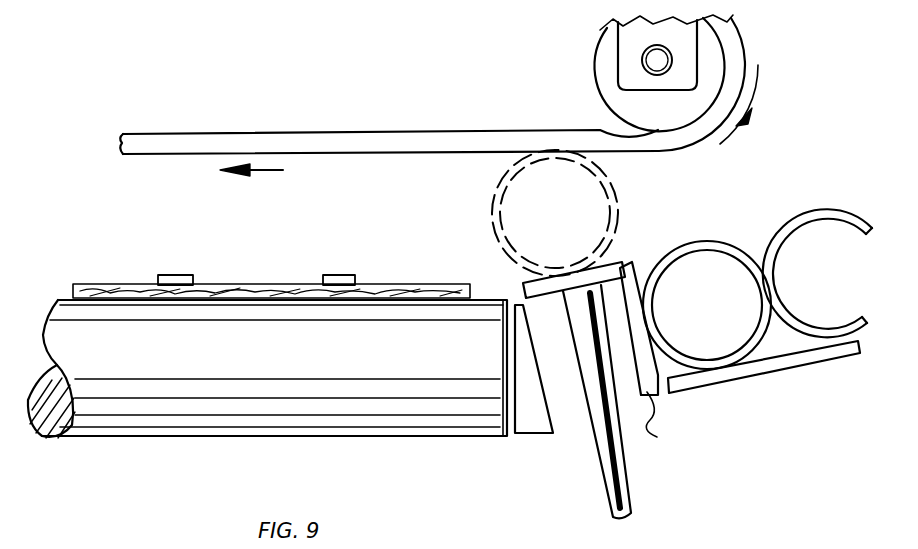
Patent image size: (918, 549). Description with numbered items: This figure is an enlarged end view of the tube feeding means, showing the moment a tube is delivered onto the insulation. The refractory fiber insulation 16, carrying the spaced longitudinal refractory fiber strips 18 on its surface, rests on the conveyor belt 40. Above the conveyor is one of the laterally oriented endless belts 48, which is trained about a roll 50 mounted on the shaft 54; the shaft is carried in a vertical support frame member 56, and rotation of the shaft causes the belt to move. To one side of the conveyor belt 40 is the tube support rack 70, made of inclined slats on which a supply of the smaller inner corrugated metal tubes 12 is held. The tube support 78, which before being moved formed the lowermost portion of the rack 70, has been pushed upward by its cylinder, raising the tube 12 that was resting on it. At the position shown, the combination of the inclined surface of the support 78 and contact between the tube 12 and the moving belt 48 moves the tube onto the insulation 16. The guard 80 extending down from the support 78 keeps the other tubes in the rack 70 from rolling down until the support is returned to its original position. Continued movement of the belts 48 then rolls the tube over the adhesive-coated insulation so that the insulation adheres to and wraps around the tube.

The inner corrugated metal tube 12 is at (618, 205).
The refractory fiber insulation 16 is at (225, 284).
The refractory fiber strips 18 is at (333, 275).
The conveyor belt 40 is at (433, 416).
The endless belts 48 is at (415, 129).
The rolls 50 is at (594, 80).
The shaft 54 is at (658, 60).
The vertical support frame members 56 is at (633, 37).
The tube support rack 70 is at (743, 372).
The tube support 78 is at (621, 263).
The guard 80 is at (659, 427).